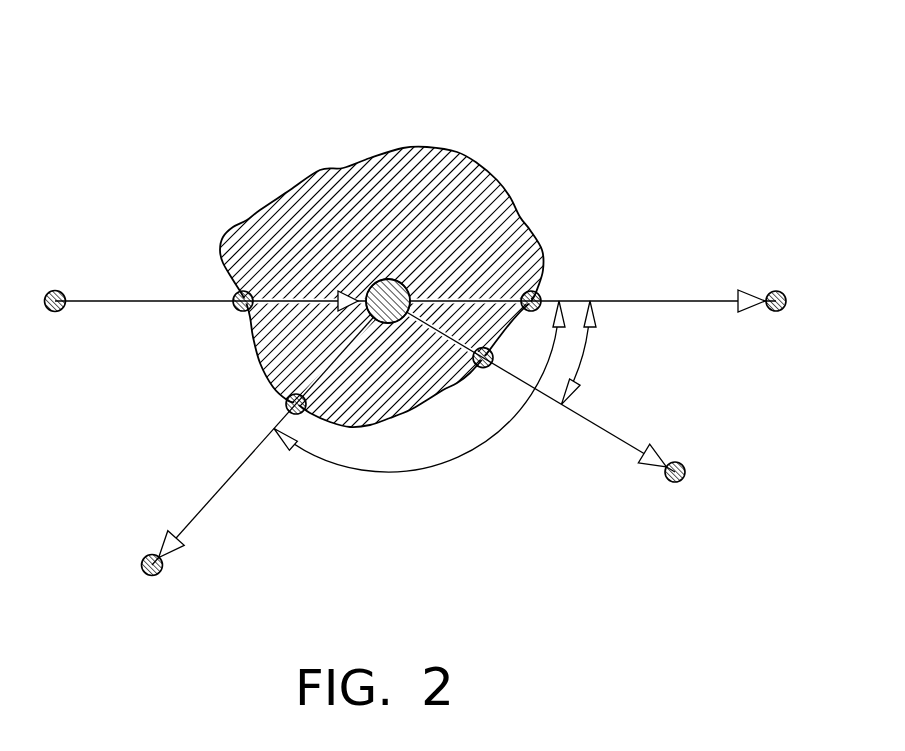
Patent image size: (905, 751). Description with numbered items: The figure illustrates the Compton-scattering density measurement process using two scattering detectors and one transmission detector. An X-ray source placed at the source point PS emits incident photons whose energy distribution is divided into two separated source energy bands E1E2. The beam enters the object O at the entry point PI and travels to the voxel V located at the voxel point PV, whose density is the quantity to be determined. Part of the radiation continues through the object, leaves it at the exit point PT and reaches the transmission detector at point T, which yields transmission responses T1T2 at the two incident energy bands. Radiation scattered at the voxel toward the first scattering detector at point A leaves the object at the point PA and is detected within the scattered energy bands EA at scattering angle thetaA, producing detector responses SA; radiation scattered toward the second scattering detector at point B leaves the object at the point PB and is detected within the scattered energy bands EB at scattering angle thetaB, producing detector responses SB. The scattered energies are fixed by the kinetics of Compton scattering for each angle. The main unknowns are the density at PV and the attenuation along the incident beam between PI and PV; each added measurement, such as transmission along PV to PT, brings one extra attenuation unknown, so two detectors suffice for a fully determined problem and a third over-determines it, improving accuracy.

The object O is at (427, 147).
The voxel V is at (404, 278).
The voxel point PV is at (383, 277).
The X-ray source point PS is at (40, 280).
The incident beam entry point PI is at (229, 321).
The transmitted beam exit point PT is at (548, 284).
The transmission detector point T is at (774, 279).
The transmission responses T1T2 is at (793, 346).
The exit point toward scattering detector A PA is at (489, 379).
The exit point toward scattering detector B PB is at (274, 405).
The scattering detector point A is at (689, 464).
The scattering detector point B is at (142, 549).
The source energy bands E1E2 is at (415, 284).
The detected energy bands at detector A EA is at (551, 386).
The detected energy bands at detector B EB is at (243, 433).
The detector responses at detector A SA is at (681, 514).
The detector responses at detector B SB is at (166, 610).
The scattering angle A thetaA is at (596, 352).
The scattering angle B thetaB is at (419, 391).